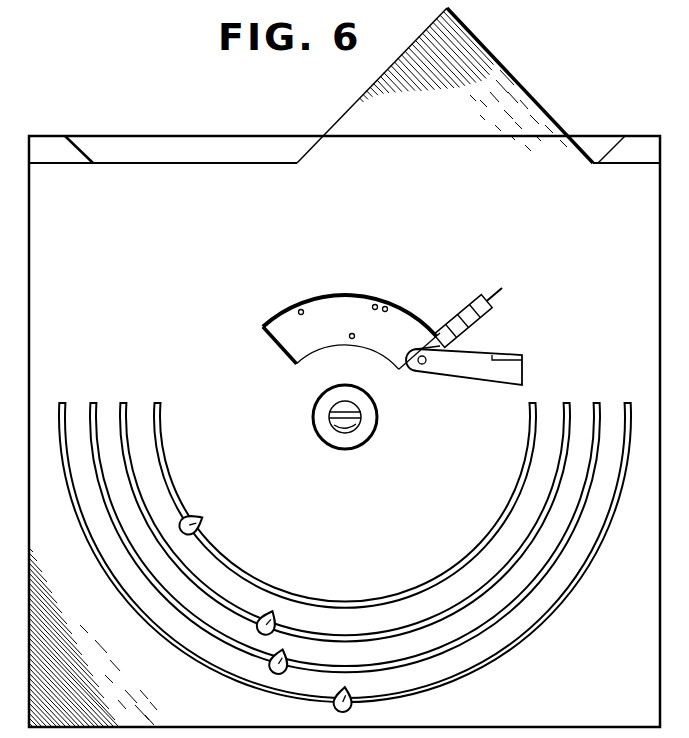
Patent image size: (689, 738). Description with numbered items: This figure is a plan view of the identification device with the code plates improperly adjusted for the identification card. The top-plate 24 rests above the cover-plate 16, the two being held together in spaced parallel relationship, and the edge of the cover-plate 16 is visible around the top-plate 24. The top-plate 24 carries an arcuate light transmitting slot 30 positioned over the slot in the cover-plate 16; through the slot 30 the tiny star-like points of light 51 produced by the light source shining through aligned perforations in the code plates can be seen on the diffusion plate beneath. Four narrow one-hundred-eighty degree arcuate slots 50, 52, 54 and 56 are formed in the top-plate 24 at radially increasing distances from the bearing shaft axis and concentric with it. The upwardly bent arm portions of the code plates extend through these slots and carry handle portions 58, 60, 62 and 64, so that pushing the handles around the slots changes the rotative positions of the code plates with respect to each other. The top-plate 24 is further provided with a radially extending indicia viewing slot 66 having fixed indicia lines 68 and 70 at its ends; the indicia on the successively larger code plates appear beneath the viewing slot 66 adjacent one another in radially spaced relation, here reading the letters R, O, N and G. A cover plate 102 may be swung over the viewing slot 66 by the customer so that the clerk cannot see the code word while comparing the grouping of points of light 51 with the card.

The cover-plate 16 is at (611, 111).
The top-plate 24 is at (596, 304).
The arcuate light transmitting slot 30 is at (409, 316).
The points of light 51 is at (301, 308).
The arcuate slot 50 is at (534, 399).
The arcuate slot 52 is at (567, 399).
The arcuate slot 54 is at (597, 398).
The arcuate slot 56 is at (627, 397).
The handle portion 58 is at (206, 519).
The handle portion 60 is at (279, 612).
The handle portion 62 is at (290, 648).
The handle portion 64 is at (340, 693).
The indicia viewing slot 66 is at (492, 316).
The fixed indicia line 68 is at (499, 300).
The fixed indicia line 70 is at (438, 347).
The cover plate 102 is at (494, 369).